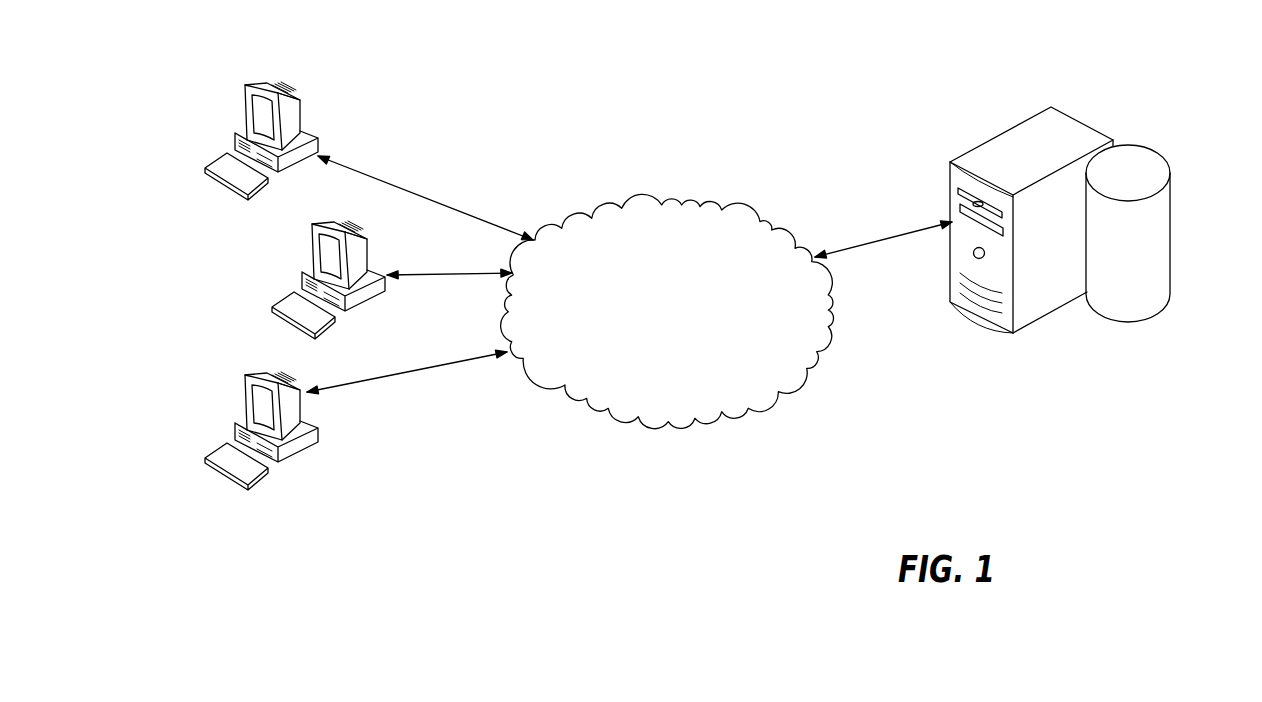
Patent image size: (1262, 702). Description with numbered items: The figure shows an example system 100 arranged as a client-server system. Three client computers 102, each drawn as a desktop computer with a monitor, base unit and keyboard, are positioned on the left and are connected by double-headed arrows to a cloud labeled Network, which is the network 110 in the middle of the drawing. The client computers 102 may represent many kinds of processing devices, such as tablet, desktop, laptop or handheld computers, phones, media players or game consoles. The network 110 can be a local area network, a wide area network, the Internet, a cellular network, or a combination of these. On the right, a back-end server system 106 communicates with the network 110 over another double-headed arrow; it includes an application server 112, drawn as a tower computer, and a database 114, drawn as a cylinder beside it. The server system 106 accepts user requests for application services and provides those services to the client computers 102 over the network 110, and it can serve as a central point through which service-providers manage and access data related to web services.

The example system 100 is at (640, 83).
The client computer 102 is at (305, 110).
The server system 106 is at (995, 360).
The network 110 is at (707, 205).
The application server 112 is at (1087, 123).
The database 114 is at (1172, 170).